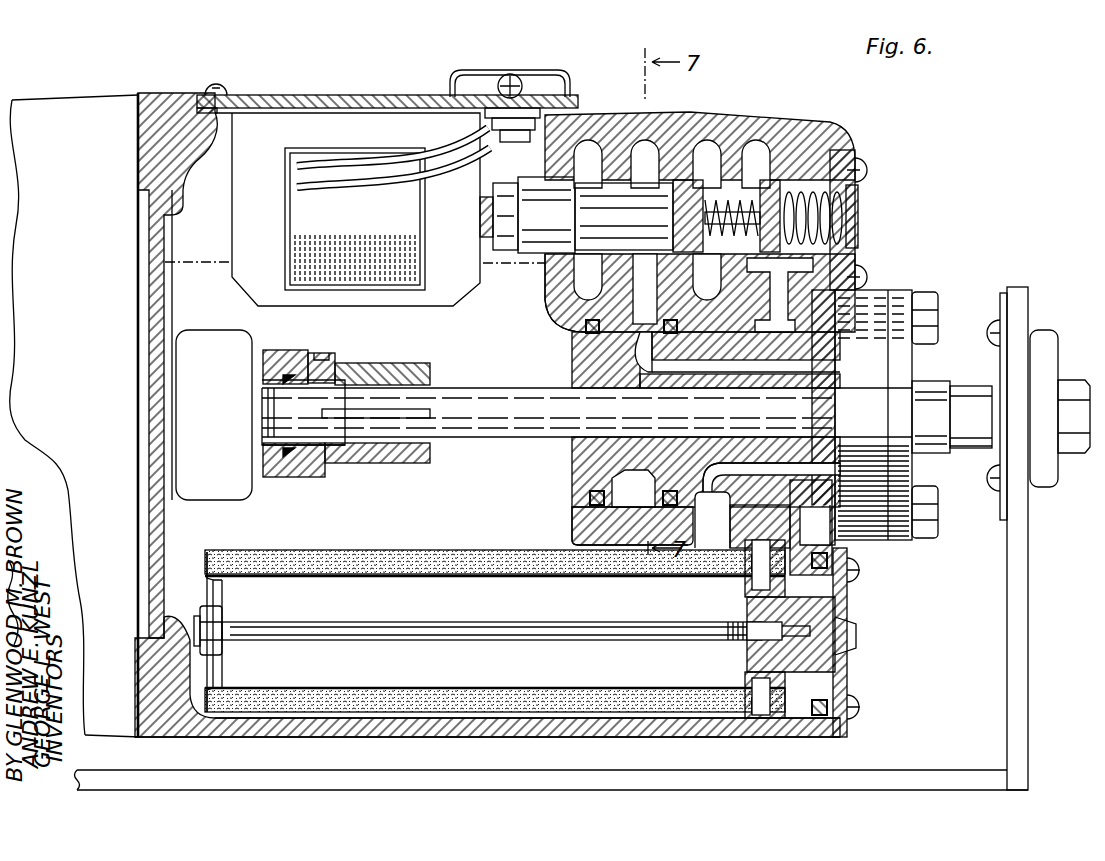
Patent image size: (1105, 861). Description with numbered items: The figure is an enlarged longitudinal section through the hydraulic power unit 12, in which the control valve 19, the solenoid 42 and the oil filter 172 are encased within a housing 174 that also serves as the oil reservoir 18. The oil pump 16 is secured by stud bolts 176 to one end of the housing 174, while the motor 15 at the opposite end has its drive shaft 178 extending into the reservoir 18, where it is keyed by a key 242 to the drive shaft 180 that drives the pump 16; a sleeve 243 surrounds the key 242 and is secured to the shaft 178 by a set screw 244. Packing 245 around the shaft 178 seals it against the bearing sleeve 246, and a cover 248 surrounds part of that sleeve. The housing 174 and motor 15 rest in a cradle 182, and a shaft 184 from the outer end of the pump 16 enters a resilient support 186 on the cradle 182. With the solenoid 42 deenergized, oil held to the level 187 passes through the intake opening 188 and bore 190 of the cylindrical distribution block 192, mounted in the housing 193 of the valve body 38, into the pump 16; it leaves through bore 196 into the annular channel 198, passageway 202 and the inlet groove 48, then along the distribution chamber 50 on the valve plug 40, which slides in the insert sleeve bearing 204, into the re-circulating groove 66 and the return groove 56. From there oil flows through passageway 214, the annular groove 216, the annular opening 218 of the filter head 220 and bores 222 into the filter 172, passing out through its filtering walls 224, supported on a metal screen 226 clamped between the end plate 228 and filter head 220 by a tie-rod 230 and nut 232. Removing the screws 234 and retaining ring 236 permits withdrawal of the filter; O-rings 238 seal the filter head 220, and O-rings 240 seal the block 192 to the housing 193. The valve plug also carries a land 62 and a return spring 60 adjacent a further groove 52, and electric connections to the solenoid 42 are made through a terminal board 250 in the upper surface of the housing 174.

The heater assembly 12 is at (972, 168).
The motor 15 is at (48, 110).
The oil pump 16 is at (878, 297).
The reservoir 18 is at (386, 502).
The control valve 19 is at (527, 278).
The valve body 38 is at (552, 300).
The valve control plug 40 is at (546, 186).
The solenoid 42 is at (448, 325).
The annular valve inlet groove 48 is at (642, 148).
The annular distribution chamber 50 is at (624, 190).
The port 52 is at (703, 148).
The annular return groove 56 is at (755, 148).
The spring 60 is at (856, 196).
The spool land 62 is at (705, 232).
The annular re-circulating groove 66 is at (584, 148).
The oil filter 172 is at (325, 540).
The housing 174 is at (438, 732).
The stud bolts 176 is at (928, 298).
The drive shaft 178 is at (270, 408).
The drive shaft 180 is at (470, 426).
The cradle 182 is at (133, 782).
The shaft 184 is at (972, 387).
The resilient support 186 is at (1048, 345).
The oil level 187 is at (168, 260).
The intake opening 188 is at (700, 527).
The bore 190 is at (740, 480).
The oil distribution block 192 is at (580, 448).
The housing 193 is at (575, 525).
The bore 196 is at (720, 376).
The annular channel 198 is at (640, 340).
The passageway 202 is at (640, 300).
The insert sleeve bearing 204 is at (804, 176).
The passageway 214 is at (765, 300).
The annular groove 216 is at (808, 318).
The annular opening 218 is at (797, 600).
The filter head 220 is at (855, 632).
The bores 222 is at (748, 605).
The external cylindrical walls 224 is at (478, 556).
The cylindrical metal screen 226 is at (466, 578).
The end plate 228 is at (224, 592).
The tie-rod 230 is at (362, 632).
The nut 232 is at (210, 614).
The screws 234 is at (858, 566).
The retaining ring 236 is at (850, 676).
The O-rings 238 is at (759, 558).
The O-rings 240 is at (672, 330).
The key 242 is at (372, 405).
The sleeve 243 is at (378, 370).
The set screw 244 is at (332, 355).
The packing 245 is at (275, 440).
The bearing sleeve 246 is at (280, 360).
The cover 248 is at (190, 345).
The terminal board 250 is at (502, 72).